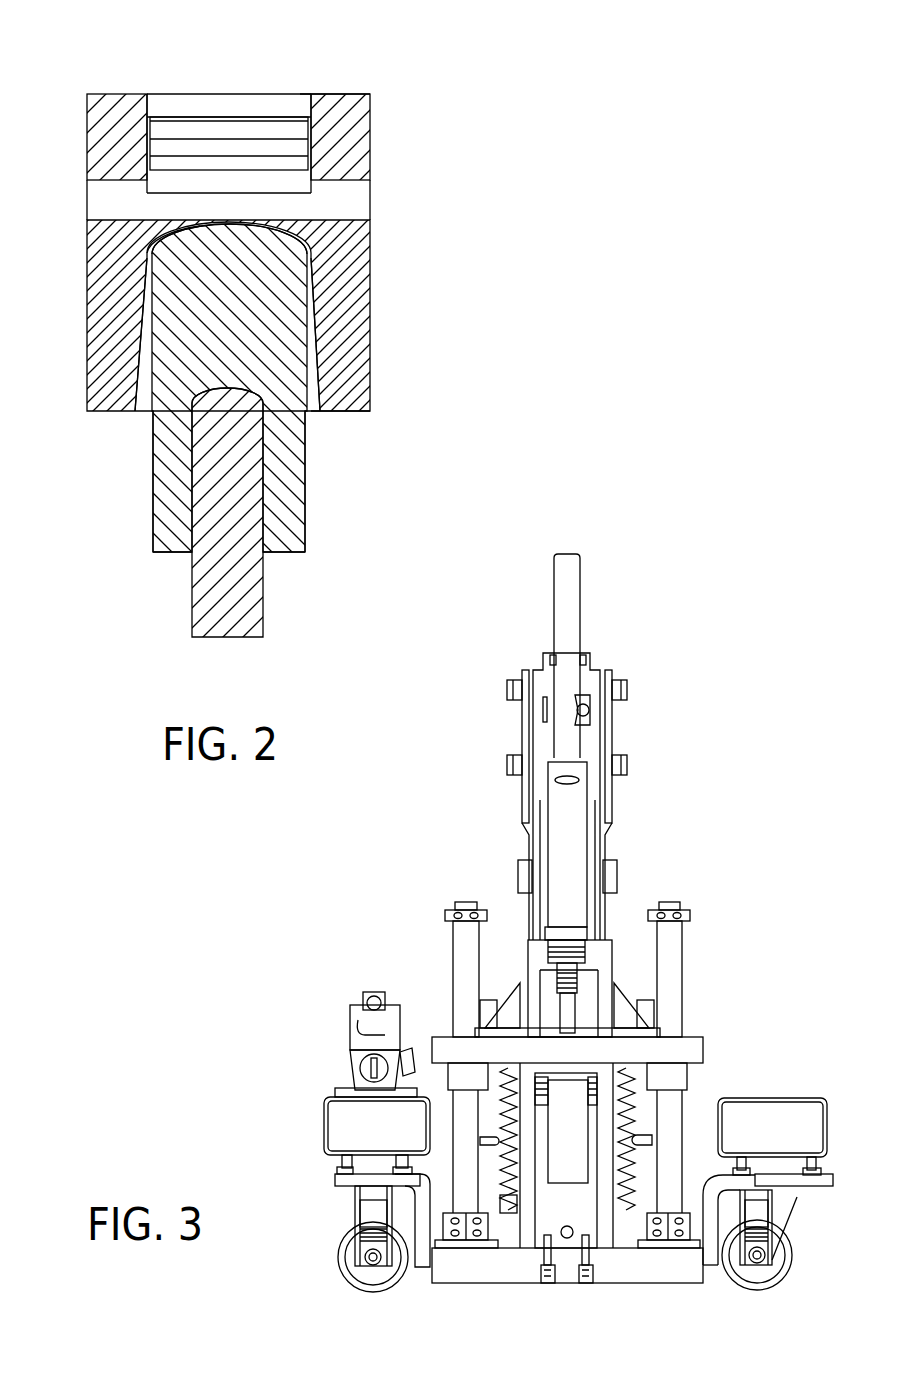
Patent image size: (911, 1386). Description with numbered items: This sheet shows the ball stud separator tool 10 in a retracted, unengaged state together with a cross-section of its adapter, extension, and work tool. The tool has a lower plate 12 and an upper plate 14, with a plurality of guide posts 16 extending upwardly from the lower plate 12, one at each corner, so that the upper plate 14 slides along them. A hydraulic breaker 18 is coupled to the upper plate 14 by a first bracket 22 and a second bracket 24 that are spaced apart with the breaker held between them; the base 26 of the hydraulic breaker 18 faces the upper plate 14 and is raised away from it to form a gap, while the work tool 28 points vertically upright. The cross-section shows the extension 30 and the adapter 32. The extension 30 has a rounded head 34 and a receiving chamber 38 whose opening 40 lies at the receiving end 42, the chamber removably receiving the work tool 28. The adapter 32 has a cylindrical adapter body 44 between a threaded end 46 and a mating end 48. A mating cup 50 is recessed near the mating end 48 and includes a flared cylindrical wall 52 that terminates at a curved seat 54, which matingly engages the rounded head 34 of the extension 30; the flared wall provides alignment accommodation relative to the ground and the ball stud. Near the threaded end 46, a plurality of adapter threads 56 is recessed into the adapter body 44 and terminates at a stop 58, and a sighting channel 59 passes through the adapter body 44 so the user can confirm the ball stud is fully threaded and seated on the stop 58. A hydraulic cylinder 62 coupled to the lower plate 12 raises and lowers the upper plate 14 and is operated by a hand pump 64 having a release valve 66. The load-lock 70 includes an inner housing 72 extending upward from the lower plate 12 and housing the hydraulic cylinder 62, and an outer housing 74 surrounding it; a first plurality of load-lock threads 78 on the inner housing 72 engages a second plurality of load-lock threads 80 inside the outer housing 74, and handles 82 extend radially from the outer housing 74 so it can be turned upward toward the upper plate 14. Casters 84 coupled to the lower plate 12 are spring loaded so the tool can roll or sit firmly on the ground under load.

In FIG. 3, the ball stud separator tool 10 is at (722, 649).
In FIG. 3, the lower plate 12 is at (643, 1263).
In FIG. 3, the upper plate 14 is at (683, 1051).
In FIG. 3, the guide posts 16 is at (463, 935).
In FIG. 3, the hydraulic breaker 18 is at (567, 848).
In FIG. 3, the first bracket 22 is at (527, 730).
In FIG. 3, the second bracket 24 is at (608, 730).
In FIG. 3, the base 26 is at (567, 1037).
In FIG. 2, the work tool 28 is at (255, 618).
In FIG. 3, the work tool 28 is at (572, 585).
In FIG. 2, the extension 30 is at (293, 532).
In FIG. 2, the adapter 32 is at (360, 143).
In FIG. 2, the rounded head 34 is at (292, 244).
In FIG. 2, the receiving chamber 38 is at (263, 437).
In FIG. 2, the opening 40 is at (263, 553).
In FIG. 2, the receiving end 42 is at (173, 553).
In FIG. 2, the adapter body 44 is at (371, 308).
In FIG. 2, the threaded end 46 is at (331, 95).
In FIG. 2, the mating end 48 is at (333, 410).
In FIG. 2, the mating cup 50 is at (143, 414).
In FIG. 2, the flared cylindrical wall 52 is at (323, 367).
In FIG. 2, the curved seat 54 is at (165, 236).
In FIG. 2, the adapter threads 56 is at (186, 137).
In FIG. 2, the stop 58 is at (230, 190).
In FIG. 2, the sighting channel 59 is at (328, 203).
In FIG. 3, the hydraulic cylinder 62 is at (563, 1172).
In FIG. 3, the hand pump 64 is at (360, 1000).
In FIG. 3, the release valve 66 is at (413, 1057).
In FIG. 3, the load-lock 70 is at (635, 1110).
In FIG. 3, the inner housing 72 is at (517, 1218).
In FIG. 3, the outer housing 74 is at (507, 1173).
In FIG. 3, the first plurality of load-lock threads 78 is at (515, 1115).
In FIG. 3, the second plurality of load-lock threads 80 is at (510, 1195).
In FIG. 3, the handles 82 is at (652, 1140).
In FIG. 3, the casters 84 is at (782, 1217).